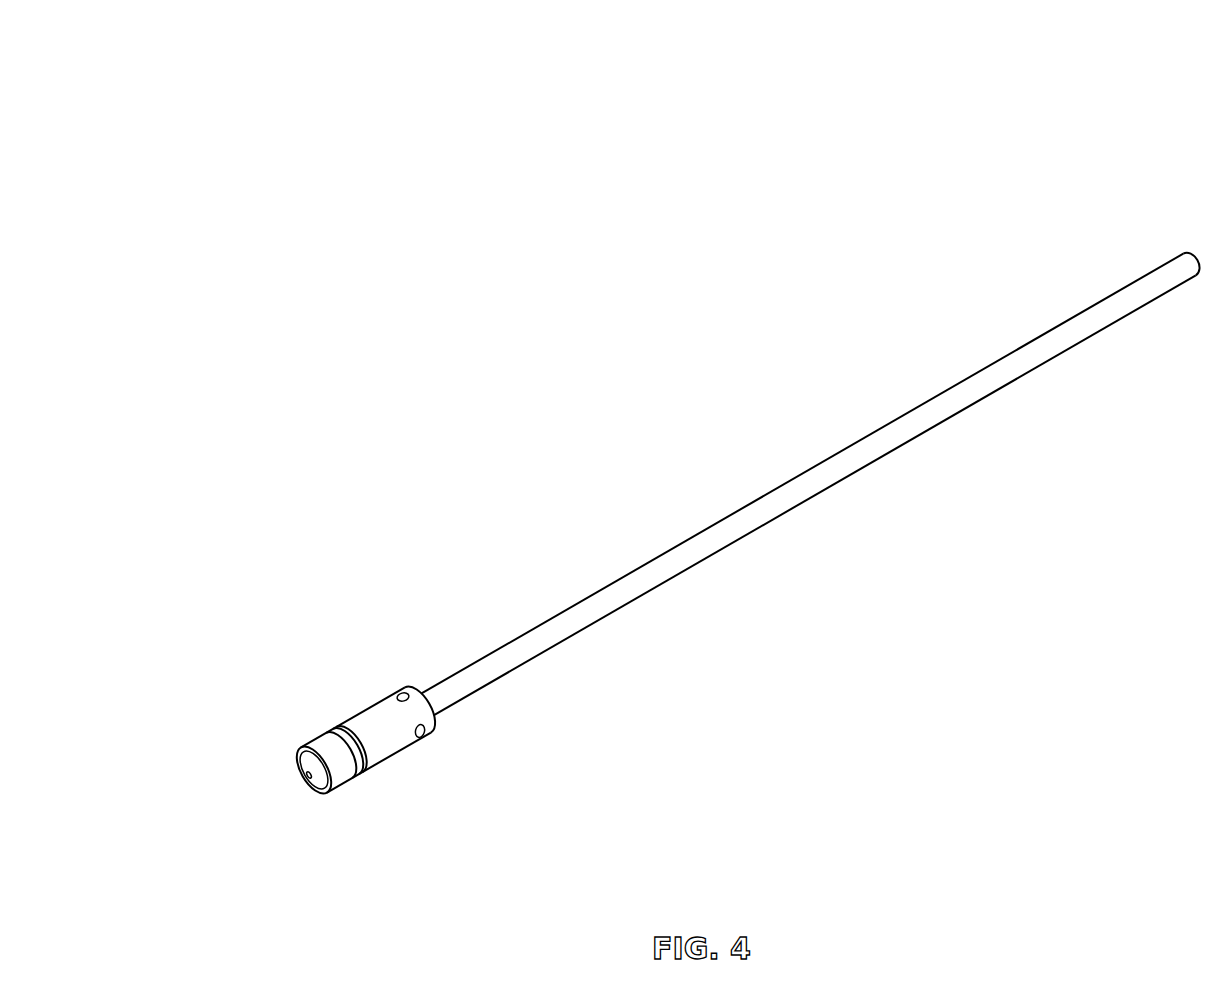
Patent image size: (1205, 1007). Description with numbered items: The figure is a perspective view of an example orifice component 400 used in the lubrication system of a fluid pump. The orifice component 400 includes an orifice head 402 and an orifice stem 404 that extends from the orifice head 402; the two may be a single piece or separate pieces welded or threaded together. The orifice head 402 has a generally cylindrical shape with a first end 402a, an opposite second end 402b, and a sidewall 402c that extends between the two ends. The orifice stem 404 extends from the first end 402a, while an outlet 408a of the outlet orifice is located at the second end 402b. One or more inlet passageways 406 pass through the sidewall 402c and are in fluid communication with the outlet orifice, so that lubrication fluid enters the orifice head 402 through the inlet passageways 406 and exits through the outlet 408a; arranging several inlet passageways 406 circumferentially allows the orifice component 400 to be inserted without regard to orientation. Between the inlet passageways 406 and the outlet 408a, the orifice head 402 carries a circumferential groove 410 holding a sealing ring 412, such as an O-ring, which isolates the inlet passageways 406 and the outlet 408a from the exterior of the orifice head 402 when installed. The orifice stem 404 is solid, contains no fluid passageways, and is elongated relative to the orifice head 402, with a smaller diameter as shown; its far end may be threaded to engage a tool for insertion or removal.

The orifice component 400 is at (653, 435).
The orifice head 402 is at (369, 734).
The first end 402a is at (438, 718).
The second end 402b is at (315, 788).
The sidewall 402c is at (393, 753).
The orifice stem 404 is at (768, 501).
The inlet passageways 406 is at (404, 693).
The outlet 408a is at (305, 776).
The circumferential groove 410 is at (347, 742).
The sealing ring 412 is at (330, 734).